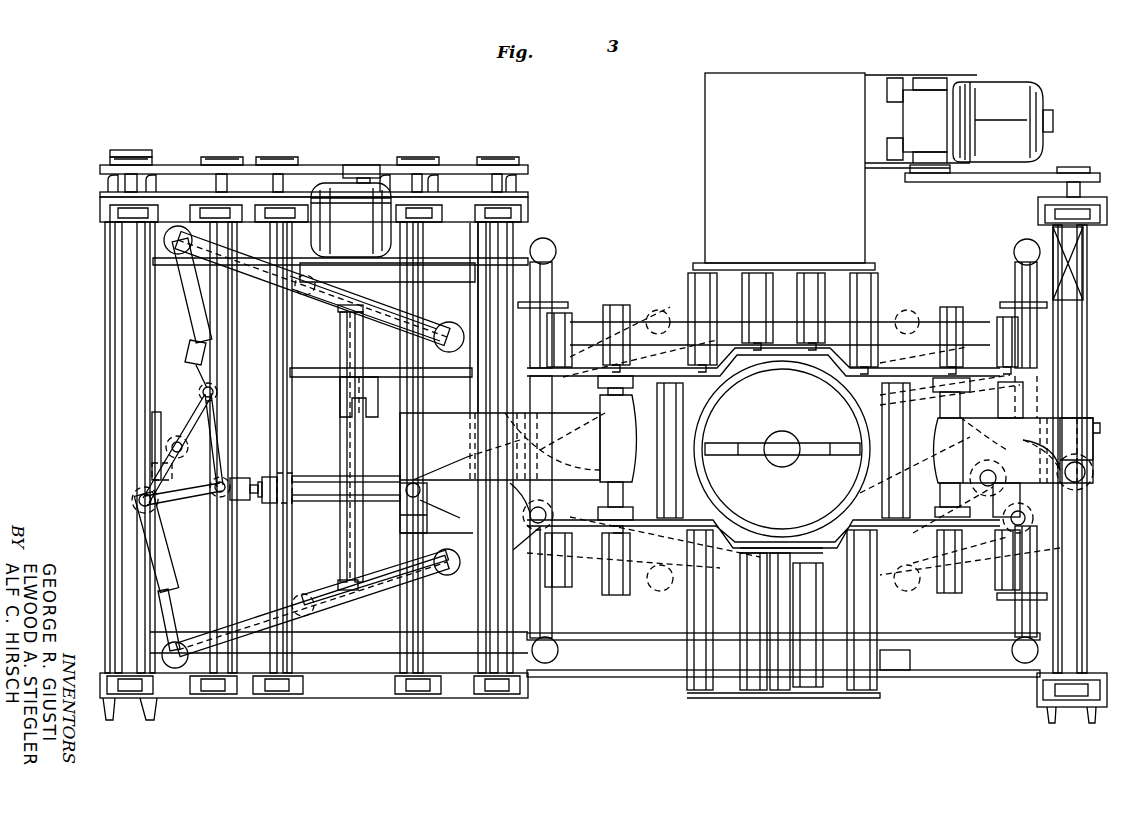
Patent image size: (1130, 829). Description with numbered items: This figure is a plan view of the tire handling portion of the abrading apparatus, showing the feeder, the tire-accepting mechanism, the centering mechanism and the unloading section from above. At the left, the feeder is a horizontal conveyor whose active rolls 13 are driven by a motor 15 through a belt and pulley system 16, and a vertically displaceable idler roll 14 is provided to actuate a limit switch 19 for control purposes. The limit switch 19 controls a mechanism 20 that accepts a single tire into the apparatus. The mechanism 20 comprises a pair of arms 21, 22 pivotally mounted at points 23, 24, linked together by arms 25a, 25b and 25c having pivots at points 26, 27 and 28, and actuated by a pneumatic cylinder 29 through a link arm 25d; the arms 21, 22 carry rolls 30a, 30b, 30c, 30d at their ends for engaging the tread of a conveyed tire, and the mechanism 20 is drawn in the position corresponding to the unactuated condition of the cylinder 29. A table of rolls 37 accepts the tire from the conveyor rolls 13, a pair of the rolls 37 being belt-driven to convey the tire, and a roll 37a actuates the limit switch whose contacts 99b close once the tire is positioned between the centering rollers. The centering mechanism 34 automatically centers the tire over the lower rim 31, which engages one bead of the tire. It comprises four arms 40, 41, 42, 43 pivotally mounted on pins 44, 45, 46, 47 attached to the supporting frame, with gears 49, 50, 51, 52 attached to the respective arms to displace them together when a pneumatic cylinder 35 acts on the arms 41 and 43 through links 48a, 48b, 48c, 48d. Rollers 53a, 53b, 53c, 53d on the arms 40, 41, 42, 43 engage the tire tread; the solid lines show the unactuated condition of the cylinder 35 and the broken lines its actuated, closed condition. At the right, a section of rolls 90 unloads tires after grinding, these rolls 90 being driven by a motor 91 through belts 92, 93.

The active rolls 13 is at (225, 285).
The idler roll 14 is at (352, 545).
The motor 15 is at (340, 193).
The belt and pulley system 16 is at (177, 166).
The limit switch 19 is at (370, 418).
The mechanism 20 is at (90, 391).
The arm 21 is at (385, 313).
The arm 22 is at (383, 590).
The pivot point 23 is at (300, 297).
The pivot point 24 is at (303, 605).
The link arm 25a is at (187, 293).
The link arm 25b is at (204, 393).
The link arm 25c is at (165, 575).
The link arm 25d is at (157, 493).
The pivot 26 is at (198, 380).
The pivot 27 is at (152, 445).
The pivot 28 is at (158, 516).
The pneumatic cylinder 29 is at (323, 497).
The roll 30a is at (453, 333).
The roll 30b is at (178, 237).
The roll 30c is at (447, 570).
The roll 30d is at (173, 665).
The lower rim 31 is at (855, 405).
The centering mechanism 34 is at (575, 264).
The pneumatic cylinder 35 is at (1100, 305).
The table rolls 37 is at (608, 317).
The roll 37a is at (810, 678).
The arm 40 is at (552, 283).
The arm 41 is at (552, 613).
The arm 42 is at (1020, 275).
The arm 43 is at (1020, 618).
The pin 44 is at (520, 415).
The pin 45 is at (510, 483).
The pin 46 is at (1030, 387).
The pin 47 is at (1040, 500).
The link 48a is at (1040, 460).
The link 48b is at (990, 555).
The link 48c is at (680, 583).
The link 48d is at (568, 588).
The gear 49 is at (592, 398).
The gear 50 is at (592, 500).
The gear 51 is at (960, 402).
The gear 52 is at (955, 522).
The roller 53a is at (543, 249).
The roller 53b is at (550, 662).
The roller 53c is at (1027, 250).
The roller 53d is at (1025, 665).
The rolls 90 is at (977, 305).
The motor 91 is at (1038, 92).
The belt 92 is at (1042, 177).
The belt 93 is at (1085, 420).
The limit switch contacts 99b is at (893, 663).